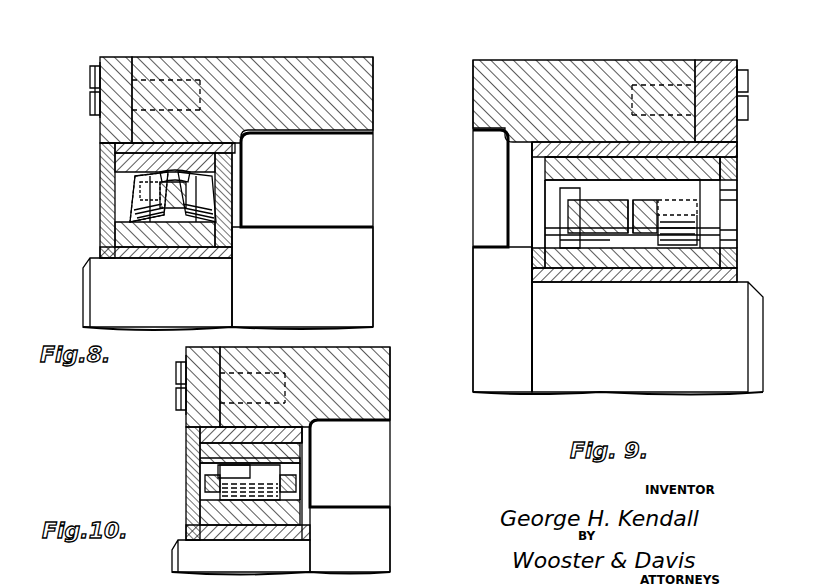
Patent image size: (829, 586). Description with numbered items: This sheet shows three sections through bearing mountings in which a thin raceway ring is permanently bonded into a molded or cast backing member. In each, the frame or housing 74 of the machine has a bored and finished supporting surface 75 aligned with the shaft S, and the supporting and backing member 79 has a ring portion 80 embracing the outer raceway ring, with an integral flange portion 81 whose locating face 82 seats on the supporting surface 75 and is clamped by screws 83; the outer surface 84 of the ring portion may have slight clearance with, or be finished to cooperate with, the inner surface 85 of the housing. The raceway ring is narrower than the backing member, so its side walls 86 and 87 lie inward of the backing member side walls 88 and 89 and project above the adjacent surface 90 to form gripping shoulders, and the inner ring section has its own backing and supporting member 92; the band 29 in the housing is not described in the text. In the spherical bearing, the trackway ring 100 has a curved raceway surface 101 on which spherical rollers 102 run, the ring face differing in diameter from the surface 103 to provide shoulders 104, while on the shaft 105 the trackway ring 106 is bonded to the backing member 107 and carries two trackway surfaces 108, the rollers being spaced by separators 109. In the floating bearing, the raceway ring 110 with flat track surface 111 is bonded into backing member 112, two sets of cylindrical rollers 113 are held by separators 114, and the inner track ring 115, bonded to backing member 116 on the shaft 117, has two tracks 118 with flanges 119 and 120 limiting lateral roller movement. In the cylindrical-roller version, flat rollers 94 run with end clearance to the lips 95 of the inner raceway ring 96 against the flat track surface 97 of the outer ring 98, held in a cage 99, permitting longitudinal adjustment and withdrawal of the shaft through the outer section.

In FIG. 8, the spindle housing band 29 is at (172, 148).
In FIG. 9, the spindle housing band 29 is at (573, 150).
In FIG. 8, the frame or housing 74 is at (314, 60).
In FIG. 10, the frame or housing 74 is at (378, 393).
In FIG. 9, the frame or housing 74 is at (528, 60).
In FIG. 8, the supporting surface 75 is at (122, 68).
In FIG. 10, the supporting surface 75 is at (212, 360).
In FIG. 9, the supporting surface 75 is at (718, 68).
In FIG. 8, the supporting and backing member 79 is at (94, 151).
In FIG. 10, the supporting and backing member 79 is at (176, 437).
In FIG. 8, the ring portion 80 is at (100, 145).
In FIG. 10, the ring portion 80 is at (296, 438).
In FIG. 9, the ring portion 80 is at (737, 145).
In FIG. 8, the flange portion 81 is at (98, 62).
In FIG. 10, the flange portion 81 is at (186, 360).
In FIG. 9, the flange portion 81 is at (740, 68).
In FIG. 8, the locating face or surface 82 is at (135, 90).
In FIG. 10, the locating face or surface 82 is at (228, 370).
In FIG. 9, the locating face or surface 82 is at (688, 88).
In FIG. 8, the screws 83 is at (90, 75).
In FIG. 10, the screws 83 is at (180, 375).
In FIG. 9, the screws 83 is at (750, 85).
In FIG. 8, the outer surface 84 is at (205, 140).
In FIG. 10, the outer surface 84 is at (300, 425).
In FIG. 9, the outer surface 84 is at (615, 140).
In FIG. 8, the inner surface 85 is at (245, 137).
In FIG. 10, the inner surface 85 is at (315, 430).
In FIG. 9, the inner surface 85 is at (530, 168).
In FIG. 10, the side wall 86 is at (200, 478).
In FIG. 9, the side wall 86 is at (565, 185).
In FIG. 10, the side wall 87 is at (305, 485).
In FIG. 9, the side wall 87 is at (712, 182).
In FIG. 8, the side wall 88 is at (108, 167).
In FIG. 10, the side wall 88 is at (186, 453).
In FIG. 9, the side wall 88 is at (740, 205).
In FIG. 8, the side wall 89 is at (245, 163).
In FIG. 9, the side wall 89 is at (545, 178).
In FIG. 10, the surface 90 is at (196, 465).
In FIG. 9, the surface 90 is at (725, 170).
In FIG. 10, the backing and supporting member 92 is at (298, 537).
In FIG. 10, the flat or cylindrical rollers 94 is at (258, 496).
In FIG. 10, the lips or flanges 95 is at (295, 505).
In FIG. 10, the inner raceway ring 96 is at (252, 528).
In FIG. 10, the track surface 97 is at (236, 466).
In FIG. 10, the outer ring 98 is at (285, 453).
In FIG. 10, the cage or retainer 99 is at (290, 483).
In FIG. 8, the race or trackway ring 100 is at (230, 150).
In FIG. 8, the curved track or raceway surface 101 is at (135, 198).
In FIG. 8, the spherical rollers 102 is at (145, 208).
In FIG. 8, the face or surface 103 is at (120, 168).
In FIG. 8, the shoulders 104 is at (150, 180).
In FIG. 8, the shaft 105 is at (98, 296).
In FIG. 8, the trackway ring 106 is at (197, 250).
In FIG. 8, the backing up and supporting member 107 is at (233, 250).
In FIG. 8, the trackway surfaces 108 is at (170, 252).
In FIG. 8, the separators 109 is at (205, 205).
In FIG. 9, the raceway ring 110 is at (575, 175).
In FIG. 9, the flat or cylindrical track or raceway surface 111 is at (575, 172).
In FIG. 9, the backing up and supporting member 112 is at (743, 156).
In FIG. 9, the flat or cylindrical rollers 113 is at (740, 190).
In FIG. 9, the separators 114 is at (700, 218).
In FIG. 9, the raceway or track ring 115 is at (626, 272).
In FIG. 9, the backing up and supporting member 116 is at (695, 280).
In FIG. 9, the shaft 117 is at (555, 393).
In FIG. 9, the tracks or raceways 118 is at (580, 252).
In FIG. 9, the lip or flange 119 is at (502, 319).
In FIG. 9, the lip or flange 120 is at (648, 245).
In FIG. 10, the shaft S is at (382, 552).